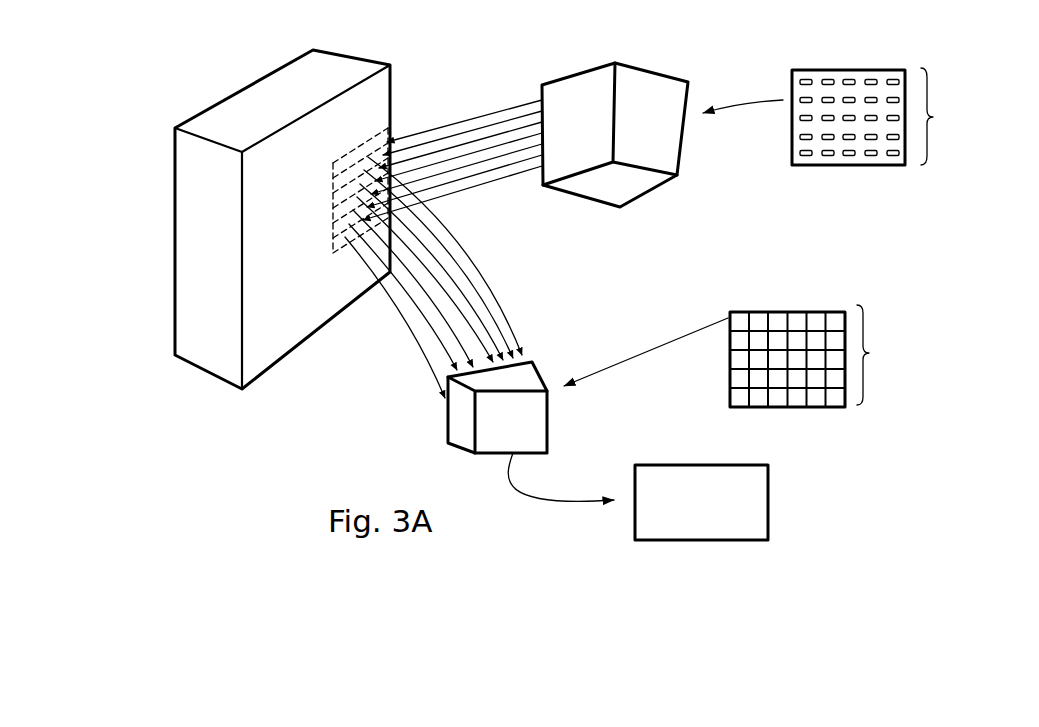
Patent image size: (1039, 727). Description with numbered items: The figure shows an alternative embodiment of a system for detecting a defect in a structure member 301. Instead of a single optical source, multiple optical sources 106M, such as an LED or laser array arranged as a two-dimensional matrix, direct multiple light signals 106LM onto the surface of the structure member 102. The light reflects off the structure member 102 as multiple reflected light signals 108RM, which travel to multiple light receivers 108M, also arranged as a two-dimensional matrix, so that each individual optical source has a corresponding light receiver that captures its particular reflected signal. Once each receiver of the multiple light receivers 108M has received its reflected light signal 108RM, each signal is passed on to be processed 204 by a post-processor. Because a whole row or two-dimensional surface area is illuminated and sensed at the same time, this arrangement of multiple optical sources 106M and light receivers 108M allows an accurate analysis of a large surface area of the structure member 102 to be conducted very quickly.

The structure member 102 is at (197, 346).
The multiple light signals 106LM is at (462, 116).
The multiple optical sources 106M is at (652, 89).
The multiple reflected light signals 108RM is at (484, 280).
The multiple light receivers 108M is at (531, 428).
The post-processing 204 is at (638, 496).
The system for detecting a defect in a structure member 301 is at (746, 232).